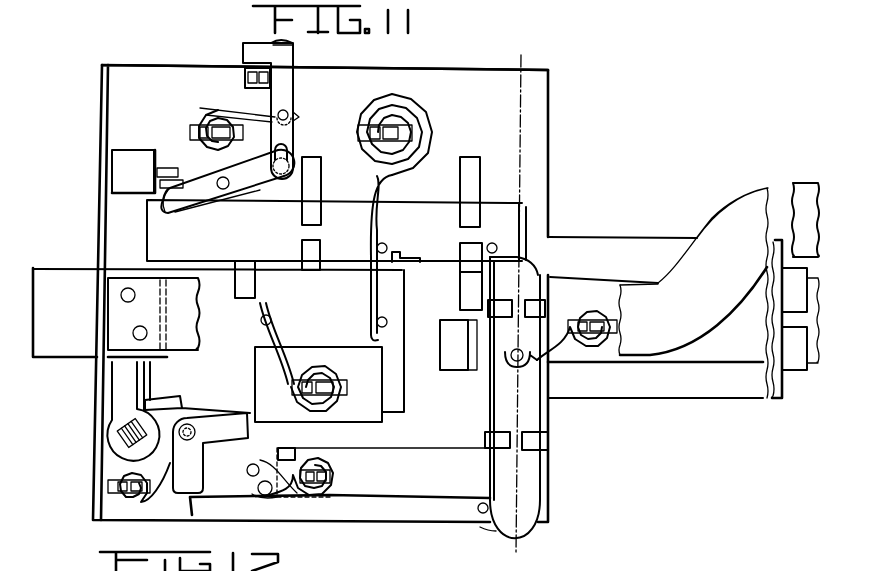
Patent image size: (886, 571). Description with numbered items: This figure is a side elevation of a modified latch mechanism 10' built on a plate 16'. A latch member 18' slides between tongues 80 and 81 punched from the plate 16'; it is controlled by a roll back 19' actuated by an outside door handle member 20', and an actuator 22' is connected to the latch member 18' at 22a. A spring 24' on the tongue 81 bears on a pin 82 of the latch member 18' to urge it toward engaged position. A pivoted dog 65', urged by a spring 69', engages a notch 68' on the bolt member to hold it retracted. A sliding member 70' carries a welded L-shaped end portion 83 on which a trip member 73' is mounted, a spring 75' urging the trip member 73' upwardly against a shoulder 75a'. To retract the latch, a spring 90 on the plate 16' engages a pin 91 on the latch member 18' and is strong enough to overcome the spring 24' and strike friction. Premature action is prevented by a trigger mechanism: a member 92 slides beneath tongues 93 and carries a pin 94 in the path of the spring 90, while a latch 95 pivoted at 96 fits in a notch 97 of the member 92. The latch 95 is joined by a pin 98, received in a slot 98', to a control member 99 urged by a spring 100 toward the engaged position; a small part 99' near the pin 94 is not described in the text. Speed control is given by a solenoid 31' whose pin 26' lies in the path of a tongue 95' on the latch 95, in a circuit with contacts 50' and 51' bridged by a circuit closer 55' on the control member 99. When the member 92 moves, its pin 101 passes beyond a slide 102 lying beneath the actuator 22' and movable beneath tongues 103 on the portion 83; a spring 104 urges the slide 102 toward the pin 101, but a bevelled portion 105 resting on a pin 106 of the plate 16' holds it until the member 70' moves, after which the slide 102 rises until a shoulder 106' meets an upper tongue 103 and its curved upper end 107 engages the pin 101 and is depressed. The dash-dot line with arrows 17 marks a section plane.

The latch mechanism 10' is at (348, 293).
The plate 16' is at (324, 280).
The section line 17 is at (521, 55).
The latch member 18' is at (438, 365).
The roll back 19' is at (96, 364).
The outside door handle member 20' is at (106, 438).
The actuator 22' is at (699, 259).
The connection of actuator to bolt member 22a is at (128, 289).
The spring 24' is at (318, 375).
The pin 26' is at (170, 161).
The solenoid 31' is at (133, 159).
The contact 50' is at (247, 66).
The contact 51' is at (259, 91).
The circuit closer 55' is at (260, 98).
The pivoted dog 65' is at (235, 455).
The notch 68' is at (197, 398).
The spring 69' is at (138, 501).
The sliding member 70' is at (683, 299).
The trip member 73' is at (340, 519).
The spring 75' is at (317, 477).
The shoulder 75a' is at (303, 461).
The tongue 80 is at (248, 298).
The tongue 81 is at (382, 367).
The pin 82 is at (271, 317).
The L-shaped end portion 83 is at (412, 493).
The spring 90 is at (437, 128).
The pin 91 is at (383, 318).
The member 92 is at (525, 215).
The tongues 93 is at (308, 250).
The pin 94 is at (387, 246).
The latch 95 is at (227, 181).
The tongue 95' is at (217, 206).
The pivot 96 is at (226, 178).
The notch 97 is at (167, 212).
The pin 98 is at (296, 154).
The slot 98' is at (266, 149).
The control member 99 is at (299, 53).
The stop 99' is at (414, 271).
The spring 100 is at (213, 110).
The pin 101 is at (498, 248).
The slide 102 is at (535, 413).
The tongues 103 is at (537, 300).
The spring 104 is at (535, 363).
The bevelled portion 105 is at (481, 531).
The pin 106 is at (481, 449).
The shoulder 106' is at (577, 324).
The curved upper end 107 is at (527, 260).